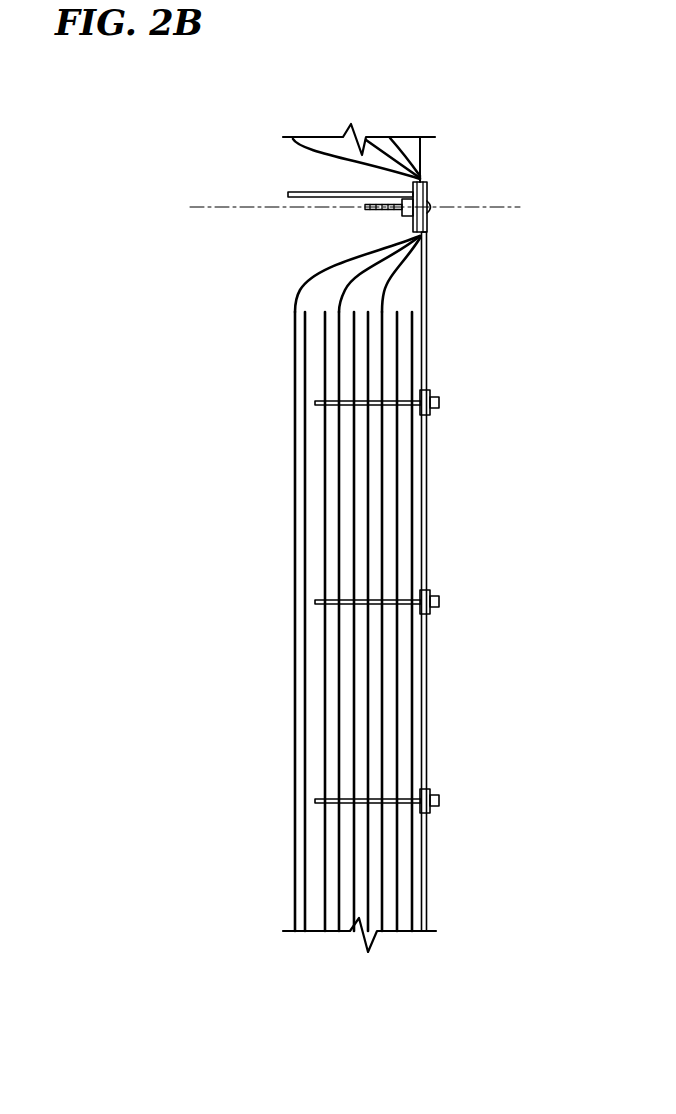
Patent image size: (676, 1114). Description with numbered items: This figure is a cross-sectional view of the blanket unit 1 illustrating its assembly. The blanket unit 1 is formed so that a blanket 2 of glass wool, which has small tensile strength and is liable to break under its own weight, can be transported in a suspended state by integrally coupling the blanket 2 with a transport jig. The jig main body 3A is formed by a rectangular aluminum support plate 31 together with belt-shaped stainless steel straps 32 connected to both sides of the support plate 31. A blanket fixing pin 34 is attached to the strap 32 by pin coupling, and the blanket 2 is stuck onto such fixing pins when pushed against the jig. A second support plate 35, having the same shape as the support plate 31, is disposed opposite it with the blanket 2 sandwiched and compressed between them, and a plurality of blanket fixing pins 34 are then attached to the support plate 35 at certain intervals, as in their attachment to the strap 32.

The blanket unit 1 is at (270, 445).
The blanket 2 is at (293, 693).
The jig main body 3A is at (428, 283).
The support plate 31 is at (428, 188).
The strap 32 is at (428, 528).
The blanket fixing pin 34 is at (307, 192).
The support plate 35 is at (412, 226).